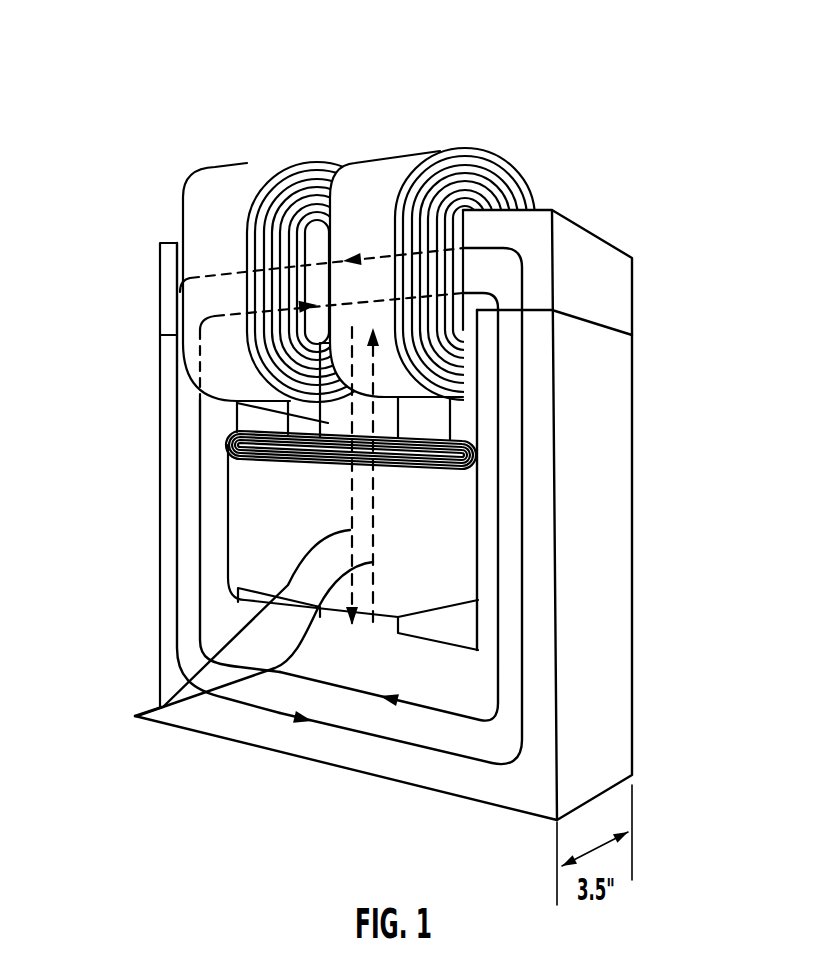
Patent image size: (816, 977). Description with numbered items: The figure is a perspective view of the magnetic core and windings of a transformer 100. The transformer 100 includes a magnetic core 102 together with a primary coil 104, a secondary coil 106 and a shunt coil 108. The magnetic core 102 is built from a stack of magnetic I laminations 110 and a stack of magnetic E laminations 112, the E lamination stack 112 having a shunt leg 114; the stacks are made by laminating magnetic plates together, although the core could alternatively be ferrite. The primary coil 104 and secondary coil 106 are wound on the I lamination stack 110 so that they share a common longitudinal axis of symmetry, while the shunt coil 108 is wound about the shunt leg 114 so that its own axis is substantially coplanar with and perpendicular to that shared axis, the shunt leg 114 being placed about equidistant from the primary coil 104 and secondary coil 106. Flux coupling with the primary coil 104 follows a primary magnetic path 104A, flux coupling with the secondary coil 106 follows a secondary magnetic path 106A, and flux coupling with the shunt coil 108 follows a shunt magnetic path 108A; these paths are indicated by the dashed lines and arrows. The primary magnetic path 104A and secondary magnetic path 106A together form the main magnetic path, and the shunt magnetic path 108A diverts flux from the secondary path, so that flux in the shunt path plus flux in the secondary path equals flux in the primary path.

The transformer 100 is at (473, 74).
The magnetic core 102 is at (152, 329).
The primary coil 104 is at (392, 170).
The primary magnetic path 104A is at (498, 553).
The secondary coil 106 is at (237, 176).
The secondary magnetic path 106A is at (177, 653).
The shunt coil 108 is at (237, 513).
The shunt magnetic path 108A is at (137, 716).
The I lamination stack 110 is at (614, 303).
The E lamination stack 112 is at (327, 748).
The shunt leg 114 is at (328, 423).